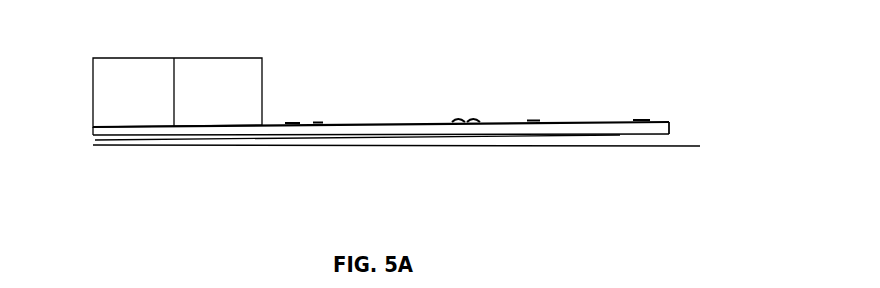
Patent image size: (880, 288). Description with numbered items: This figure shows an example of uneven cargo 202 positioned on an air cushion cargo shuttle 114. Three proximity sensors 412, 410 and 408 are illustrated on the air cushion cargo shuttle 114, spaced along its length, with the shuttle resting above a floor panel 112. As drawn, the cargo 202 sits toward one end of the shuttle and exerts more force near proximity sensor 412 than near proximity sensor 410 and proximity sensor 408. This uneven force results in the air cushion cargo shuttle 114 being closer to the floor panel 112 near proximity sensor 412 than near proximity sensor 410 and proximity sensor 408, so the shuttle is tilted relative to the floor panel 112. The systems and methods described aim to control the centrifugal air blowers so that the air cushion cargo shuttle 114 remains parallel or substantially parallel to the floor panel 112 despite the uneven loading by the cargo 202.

The uneven cargo 202 is at (143, 77).
The air cushion cargo shuttle 114 is at (582, 122).
The proximity sensor 410 is at (305, 132).
The proximity sensor 408 is at (669, 122).
The proximity sensor 412 is at (93, 128).
The floor panel 112 is at (700, 146).